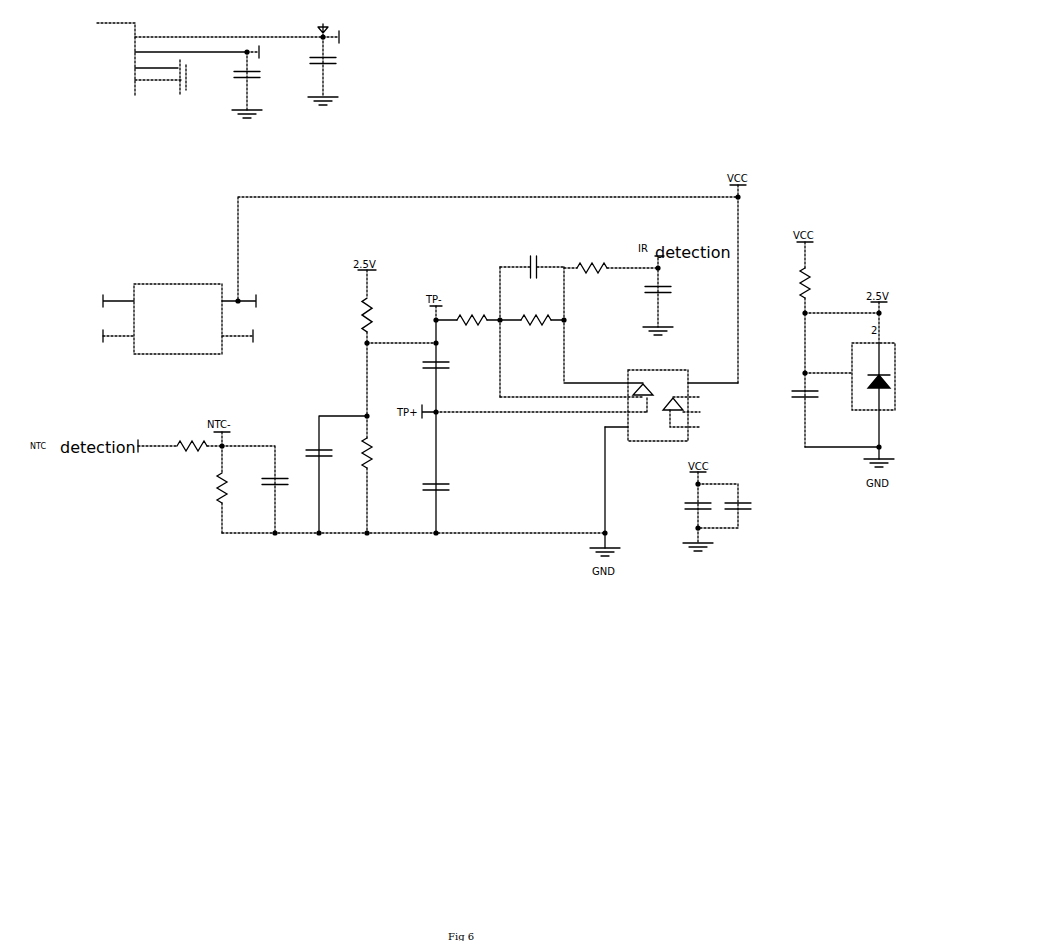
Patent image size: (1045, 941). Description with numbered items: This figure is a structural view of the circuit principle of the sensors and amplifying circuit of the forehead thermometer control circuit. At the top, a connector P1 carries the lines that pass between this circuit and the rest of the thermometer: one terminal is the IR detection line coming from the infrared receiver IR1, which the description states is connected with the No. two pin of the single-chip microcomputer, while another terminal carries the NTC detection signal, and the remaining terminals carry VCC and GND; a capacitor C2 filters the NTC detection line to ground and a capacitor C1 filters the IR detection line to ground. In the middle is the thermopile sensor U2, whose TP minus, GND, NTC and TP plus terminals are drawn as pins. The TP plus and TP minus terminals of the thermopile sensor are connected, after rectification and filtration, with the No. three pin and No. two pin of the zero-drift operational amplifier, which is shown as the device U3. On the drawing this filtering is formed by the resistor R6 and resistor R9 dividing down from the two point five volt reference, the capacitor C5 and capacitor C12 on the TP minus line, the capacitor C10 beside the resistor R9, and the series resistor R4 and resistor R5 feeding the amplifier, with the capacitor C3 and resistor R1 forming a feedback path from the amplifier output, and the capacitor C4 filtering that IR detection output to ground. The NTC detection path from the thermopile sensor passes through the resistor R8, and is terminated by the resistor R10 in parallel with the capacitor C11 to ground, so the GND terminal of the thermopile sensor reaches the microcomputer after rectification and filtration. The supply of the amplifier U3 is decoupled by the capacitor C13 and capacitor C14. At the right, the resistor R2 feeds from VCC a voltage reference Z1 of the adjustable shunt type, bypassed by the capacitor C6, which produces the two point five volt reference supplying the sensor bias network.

The connector P1 is at (209, 53).
The capacitor C1 is at (332, 80).
The capacitor C2 is at (256, 94).
The infrared receiver IR1 is at (374, 30).
The thermopile sensor U2 is at (177, 324).
The resistor R6 is at (381, 343).
The resistor R9 is at (382, 474).
The capacitor C10 is at (329, 460).
The capacitor C5 is at (447, 371).
The capacitor C12 is at (447, 494).
The resistor R4 is at (468, 321).
The resistor R5 is at (532, 321).
The capacitor C3 is at (532, 270).
The resistor R1 is at (611, 270).
The capacitor C4 is at (667, 307).
The operational amplifier U3 is at (619, 407).
The capacitor C13 is at (685, 511).
The capacitor C14 is at (735, 506).
The resistor R8 is at (180, 446).
The resistor R10 is at (237, 489).
The capacitor C11 is at (286, 488).
The resistor R2 is at (814, 344).
The voltage reference Z1 is at (871, 395).
The capacitor C6 is at (815, 401).